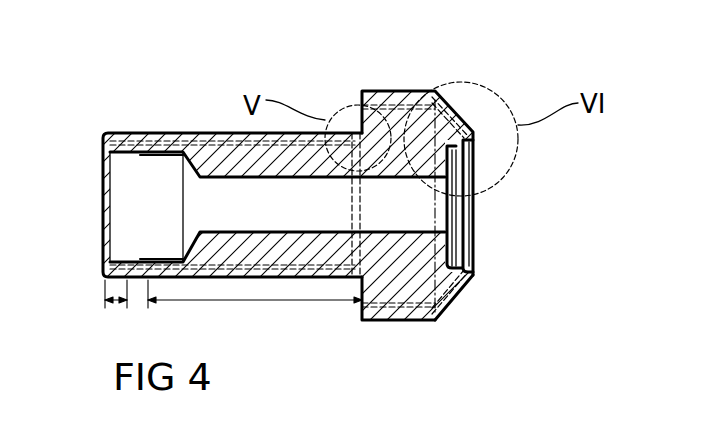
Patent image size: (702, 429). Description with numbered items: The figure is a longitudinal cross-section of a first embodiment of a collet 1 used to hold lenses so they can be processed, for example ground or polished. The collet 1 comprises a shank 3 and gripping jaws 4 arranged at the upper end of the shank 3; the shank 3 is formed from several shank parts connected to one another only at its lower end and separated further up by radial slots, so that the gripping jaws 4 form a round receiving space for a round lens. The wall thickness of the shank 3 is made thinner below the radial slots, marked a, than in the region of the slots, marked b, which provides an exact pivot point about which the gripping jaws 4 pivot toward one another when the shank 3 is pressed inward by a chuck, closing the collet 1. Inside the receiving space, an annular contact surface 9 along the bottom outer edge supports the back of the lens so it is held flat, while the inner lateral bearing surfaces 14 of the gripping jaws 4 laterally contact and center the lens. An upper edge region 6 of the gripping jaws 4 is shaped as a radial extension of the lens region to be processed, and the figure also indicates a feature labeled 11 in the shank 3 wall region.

The collet 1 is at (104, 60).
The shank 3 is at (105, 268).
The gripping jaws 4 is at (402, 97).
The upper edge region 6 is at (455, 305).
The contact surface 9 is at (477, 263).
The groove 11 is at (350, 122).
The inner lateral bearing surfaces 14 is at (475, 145).